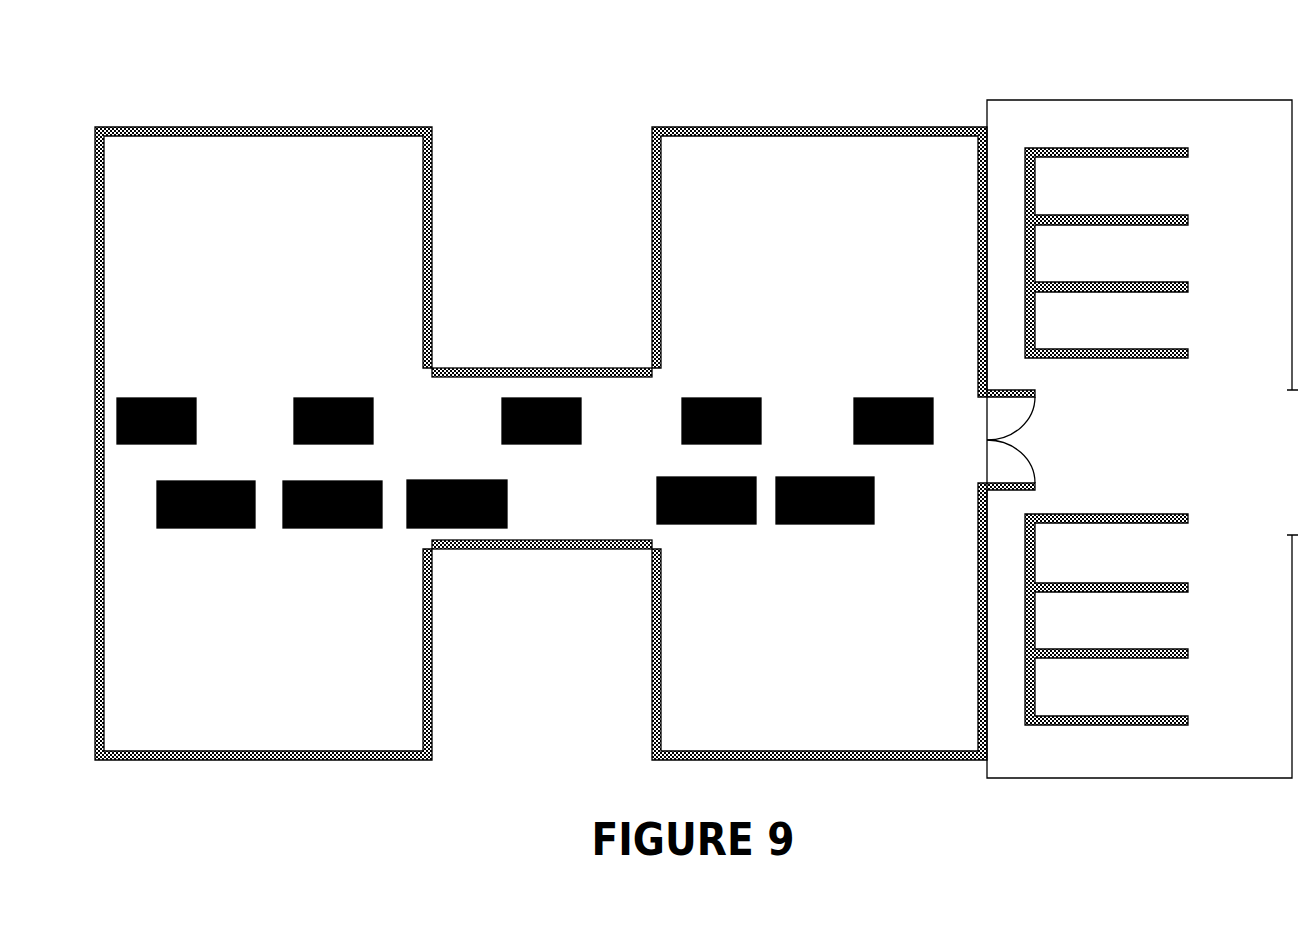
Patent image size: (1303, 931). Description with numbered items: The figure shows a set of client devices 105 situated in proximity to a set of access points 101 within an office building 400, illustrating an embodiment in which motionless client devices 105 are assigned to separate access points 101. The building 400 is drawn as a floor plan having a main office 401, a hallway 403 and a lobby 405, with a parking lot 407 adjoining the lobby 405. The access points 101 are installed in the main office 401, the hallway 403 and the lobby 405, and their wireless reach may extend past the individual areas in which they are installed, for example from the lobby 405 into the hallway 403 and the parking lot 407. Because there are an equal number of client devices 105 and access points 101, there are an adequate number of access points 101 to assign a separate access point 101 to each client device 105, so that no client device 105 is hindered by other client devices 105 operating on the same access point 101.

The office building 400 is at (78, 96).
The main office 401 is at (197, 127).
The hallway 403 is at (541, 368).
The lobby 405 is at (829, 127).
The parking lot 407 is at (1137, 100).
The access point 101 is at (525, 421).
The client device 105 is at (515, 502).